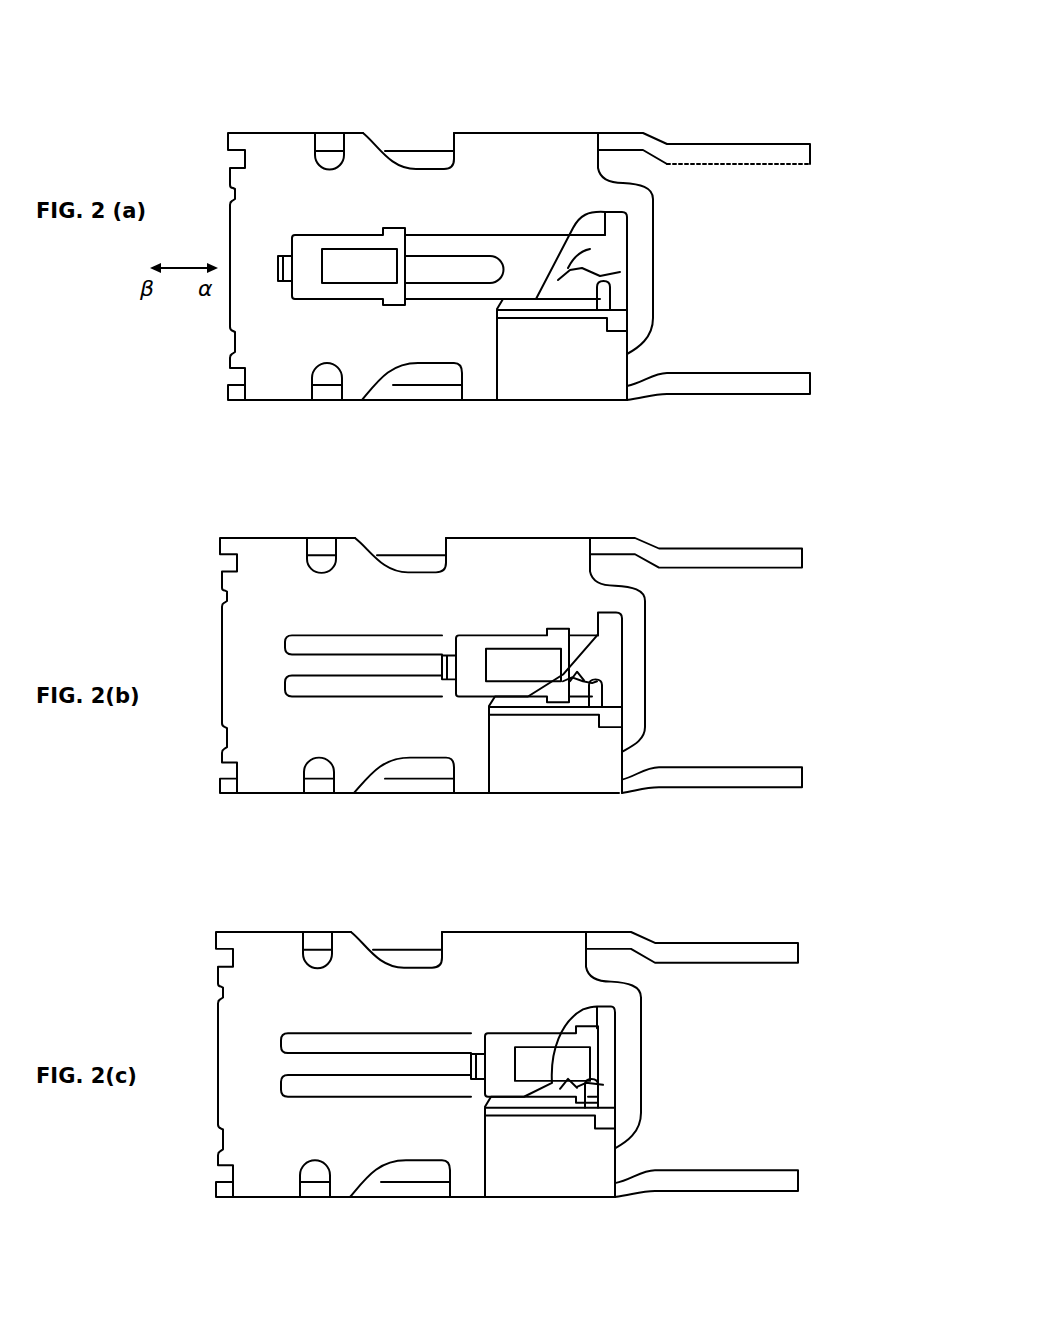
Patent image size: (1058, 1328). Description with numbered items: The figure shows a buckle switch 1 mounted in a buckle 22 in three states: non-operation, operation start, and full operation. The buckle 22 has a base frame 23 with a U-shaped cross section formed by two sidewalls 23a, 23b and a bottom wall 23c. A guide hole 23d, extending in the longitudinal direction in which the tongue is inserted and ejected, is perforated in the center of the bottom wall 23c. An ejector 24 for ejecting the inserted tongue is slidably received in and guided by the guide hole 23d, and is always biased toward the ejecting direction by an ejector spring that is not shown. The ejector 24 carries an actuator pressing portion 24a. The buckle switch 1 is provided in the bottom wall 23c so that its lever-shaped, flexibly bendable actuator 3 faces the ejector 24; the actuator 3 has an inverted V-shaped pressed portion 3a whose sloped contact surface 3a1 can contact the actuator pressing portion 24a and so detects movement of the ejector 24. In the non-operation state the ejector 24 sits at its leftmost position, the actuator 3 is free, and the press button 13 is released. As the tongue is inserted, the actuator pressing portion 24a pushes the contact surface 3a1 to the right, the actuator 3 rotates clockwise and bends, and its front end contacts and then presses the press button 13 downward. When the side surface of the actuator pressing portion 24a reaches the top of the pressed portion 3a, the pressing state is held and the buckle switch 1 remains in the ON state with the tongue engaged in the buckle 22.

In FIG. 2A, the buckle switch 1 is at (556, 382).
In FIG. 2B, the buckle switch 1 is at (548, 776).
In FIG. 2C, the buckle switch 1 is at (544, 1190).
In FIG. 2A, the actuator 3 is at (654, 200).
In FIG. 2B, the actuator 3 is at (598, 703).
In FIG. 2C, the actuator 3 is at (643, 1113).
In FIG. 2A, the pressed portion 3a is at (575, 273).
In FIG. 2B, the pressed portion 3a is at (572, 687).
In FIG. 2C, the pressed portion 3a is at (610, 1088).
In FIG. 2A, the contact surface 3a1 is at (568, 270).
In FIG. 2B, the contact surface 3a1 is at (565, 672).
In FIG. 2C, the contact surface 3a1 is at (615, 1009).
In FIG. 2A, the press button 13 is at (622, 294).
In FIG. 2B, the press button 13 is at (608, 720).
In FIG. 2C, the press button 13 is at (606, 1108).
In FIG. 2A, the buckle 22 is at (616, 113).
In FIG. 2B, the buckle 22 is at (652, 538).
In FIG. 2C, the buckle 22 is at (628, 932).
In FIG. 2A, the base frame 23 is at (283, 404).
In FIG. 2B, the base frame 23 is at (283, 786).
In FIG. 2C, the base frame 23 is at (278, 1180).
In FIG. 2A, the sidewall 23a is at (428, 143).
In FIG. 2B, the sidewall 23a is at (418, 548).
In FIG. 2C, the sidewall 23a is at (405, 942).
In FIG. 2A, the sidewall 23b is at (440, 397).
In FIG. 2B, the sidewall 23b is at (410, 787).
In FIG. 2C, the sidewall 23b is at (416, 1190).
In FIG. 2A, the bottom wall 23c is at (558, 151).
In FIG. 2B, the bottom wall 23c is at (546, 556).
In FIG. 2C, the bottom wall 23c is at (541, 950).
In FIG. 2A, the guide hole 23d is at (437, 293).
In FIG. 2B, the guide hole 23d is at (375, 684).
In FIG. 2C, the guide hole 23d is at (373, 1089).
In FIG. 2A, the ejector 24 is at (313, 243).
In FIG. 2B, the ejector 24 is at (478, 680).
In FIG. 2C, the ejector 24 is at (492, 1084).
In FIG. 2A, the actuator pressing portion 24a is at (387, 268).
In FIG. 2B, the actuator pressing portion 24a is at (553, 668).
In FIG. 2C, the actuator pressing portion 24a is at (585, 1062).